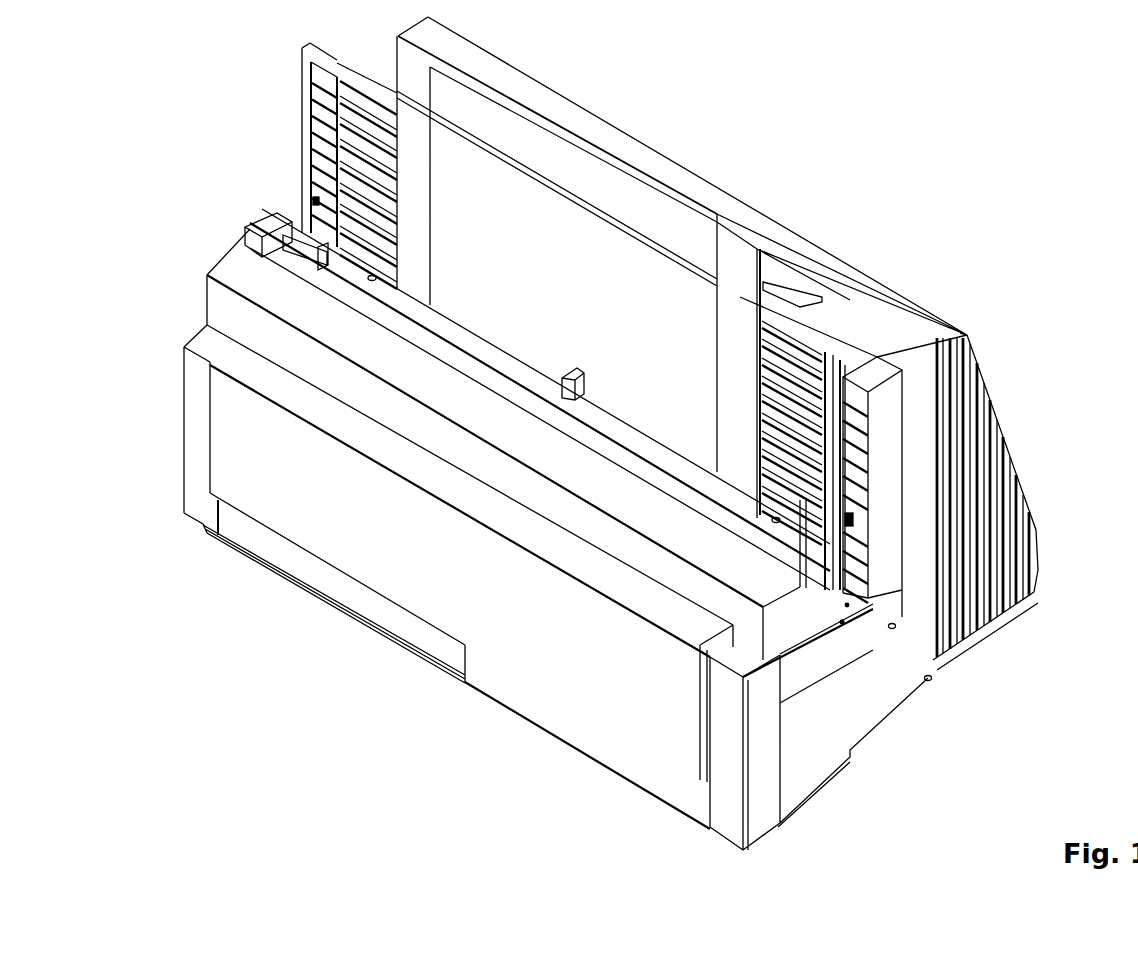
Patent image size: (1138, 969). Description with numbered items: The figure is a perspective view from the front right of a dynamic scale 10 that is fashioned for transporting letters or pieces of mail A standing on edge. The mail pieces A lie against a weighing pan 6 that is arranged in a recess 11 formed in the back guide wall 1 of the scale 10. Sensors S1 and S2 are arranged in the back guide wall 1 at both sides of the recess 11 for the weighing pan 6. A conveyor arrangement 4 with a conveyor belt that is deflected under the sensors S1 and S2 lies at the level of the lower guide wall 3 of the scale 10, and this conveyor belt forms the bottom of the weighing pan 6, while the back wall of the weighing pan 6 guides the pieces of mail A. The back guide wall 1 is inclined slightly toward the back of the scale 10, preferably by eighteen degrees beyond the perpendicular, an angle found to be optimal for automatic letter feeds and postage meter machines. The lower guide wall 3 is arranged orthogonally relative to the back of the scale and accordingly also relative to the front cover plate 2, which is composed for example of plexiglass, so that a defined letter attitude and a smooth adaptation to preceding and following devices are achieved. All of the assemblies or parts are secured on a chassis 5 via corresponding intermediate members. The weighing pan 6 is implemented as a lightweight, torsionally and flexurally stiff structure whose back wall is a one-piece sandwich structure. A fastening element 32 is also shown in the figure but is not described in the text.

The back guide wall 1 is at (903, 507).
The front cover plate 2 is at (300, 47).
The lower guide wall 3 is at (842, 622).
The fastener 32 is at (842, 622).
The conveyor arrangement 4 is at (847, 605).
The chassis 5 is at (977, 633).
The weighing pan 6 is at (880, 356).
The dynamic scale 10 is at (872, 177).
The recess 11 is at (967, 334).
The pieces of mail A is at (577, 147).
The sensor S1 is at (315, 201).
The sensor S2 is at (858, 522).